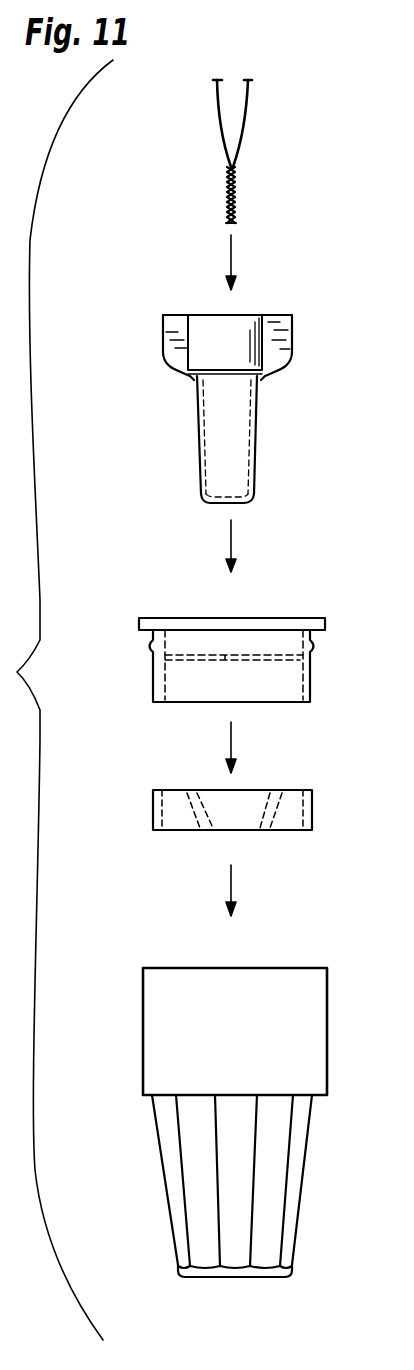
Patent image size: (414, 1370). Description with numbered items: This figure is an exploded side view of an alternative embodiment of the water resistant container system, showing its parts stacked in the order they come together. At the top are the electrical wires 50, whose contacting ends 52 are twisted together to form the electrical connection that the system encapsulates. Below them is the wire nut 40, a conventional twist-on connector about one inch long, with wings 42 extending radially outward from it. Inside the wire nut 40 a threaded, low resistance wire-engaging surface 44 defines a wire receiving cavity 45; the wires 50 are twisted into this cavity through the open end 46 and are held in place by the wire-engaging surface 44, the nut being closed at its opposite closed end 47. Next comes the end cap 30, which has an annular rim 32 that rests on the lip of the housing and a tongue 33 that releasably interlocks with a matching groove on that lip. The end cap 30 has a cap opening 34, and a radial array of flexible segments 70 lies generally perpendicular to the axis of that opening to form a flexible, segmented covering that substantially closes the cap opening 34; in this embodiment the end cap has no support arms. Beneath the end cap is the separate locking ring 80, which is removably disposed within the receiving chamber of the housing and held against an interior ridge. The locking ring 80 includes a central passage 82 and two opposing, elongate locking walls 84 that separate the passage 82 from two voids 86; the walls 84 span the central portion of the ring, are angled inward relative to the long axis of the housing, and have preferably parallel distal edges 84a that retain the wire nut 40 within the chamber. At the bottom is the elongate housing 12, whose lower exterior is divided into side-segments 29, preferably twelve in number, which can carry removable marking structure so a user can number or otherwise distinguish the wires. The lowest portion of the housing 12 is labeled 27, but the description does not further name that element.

The elongate housing 12 is at (329, 1035).
The bottom wall 27 is at (248, 1278).
The side-segments 29 is at (270, 1167).
The end cap 30 is at (269, 634).
The annular rim 32 is at (318, 636).
The tongue of tongue and groove configuration 33 is at (317, 646).
The cap opening 34 is at (210, 643).
The wire nut 40 is at (225, 383).
The wings 42 is at (176, 360).
The wire-engaging surface 44 is at (250, 424).
The wire receiving cavity 45 is at (251, 300).
The open end 46 is at (270, 313).
The closed end 47 is at (233, 504).
The electrical wires 50 is at (248, 112).
The contacting ends 52 is at (238, 188).
The flexible segments 70 is at (257, 647).
The locking ring 80 is at (249, 823).
The passage 82 is at (248, 808).
The locking walls 84 is at (195, 798).
The distal edges 84a is at (263, 830).
The voids 86 is at (178, 820).